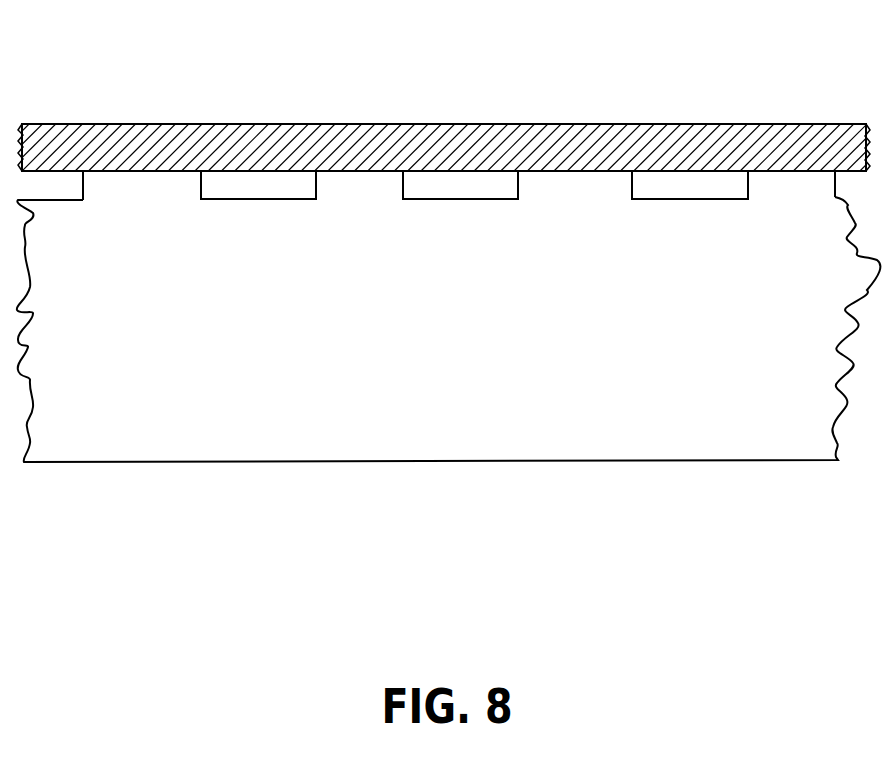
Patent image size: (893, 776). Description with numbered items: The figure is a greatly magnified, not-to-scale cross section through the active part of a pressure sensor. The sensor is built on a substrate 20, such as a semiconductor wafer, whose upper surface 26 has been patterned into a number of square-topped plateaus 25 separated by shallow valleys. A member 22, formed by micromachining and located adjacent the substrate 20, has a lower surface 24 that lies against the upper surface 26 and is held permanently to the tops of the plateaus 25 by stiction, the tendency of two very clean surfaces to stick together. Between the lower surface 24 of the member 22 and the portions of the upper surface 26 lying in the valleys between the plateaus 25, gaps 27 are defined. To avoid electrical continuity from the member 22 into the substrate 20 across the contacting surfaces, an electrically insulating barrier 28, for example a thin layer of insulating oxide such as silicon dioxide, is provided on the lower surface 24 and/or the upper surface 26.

The substrate 20 is at (449, 329).
The member 22 is at (257, 127).
The lower surface 24 is at (230, 199).
The plateaus 25 is at (143, 188).
The upper surface 26 is at (290, 175).
The gaps 27 is at (507, 183).
The electrically insulating barrier 28 is at (688, 168).